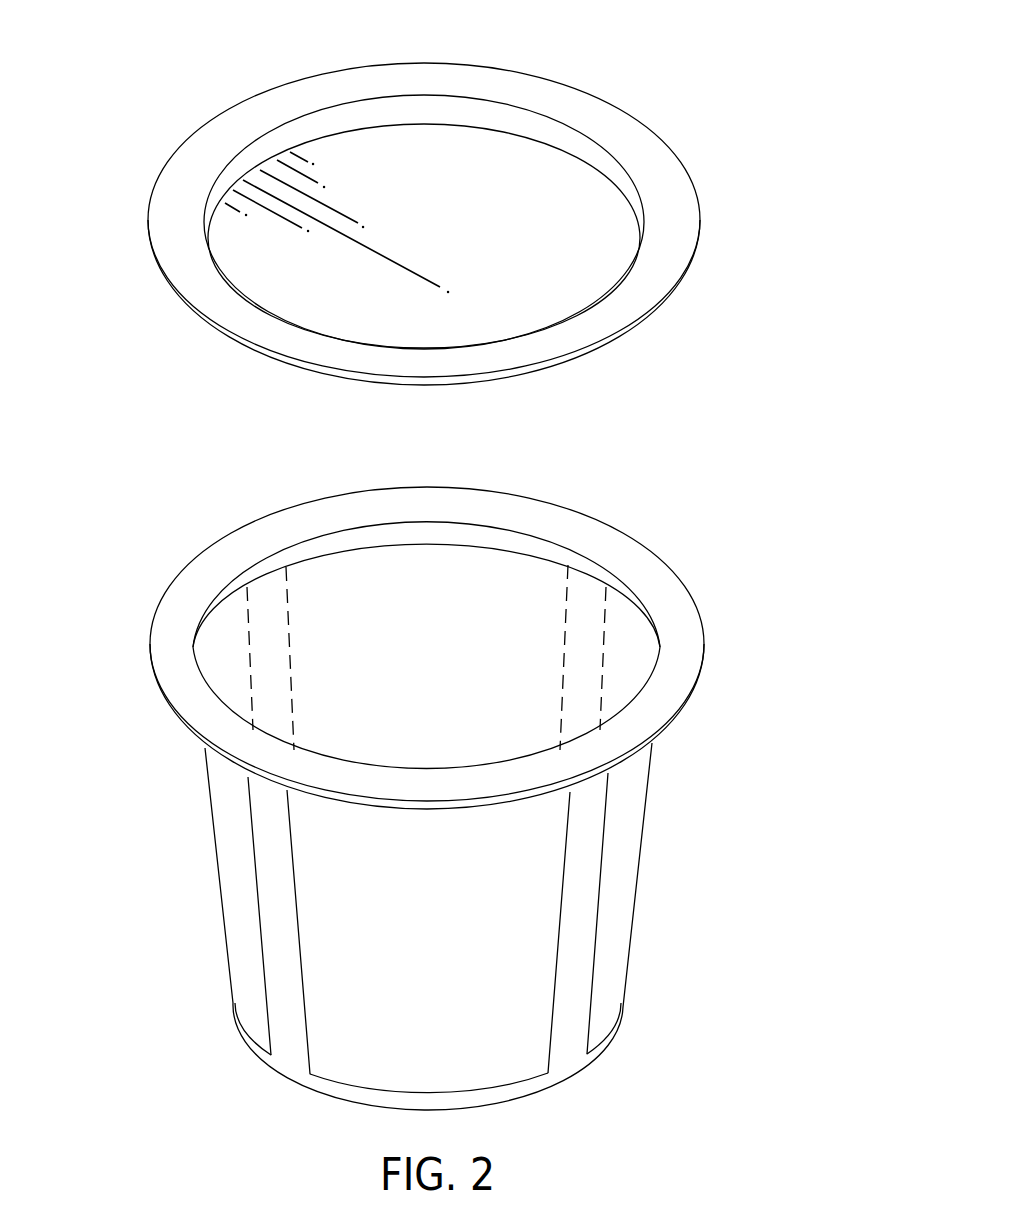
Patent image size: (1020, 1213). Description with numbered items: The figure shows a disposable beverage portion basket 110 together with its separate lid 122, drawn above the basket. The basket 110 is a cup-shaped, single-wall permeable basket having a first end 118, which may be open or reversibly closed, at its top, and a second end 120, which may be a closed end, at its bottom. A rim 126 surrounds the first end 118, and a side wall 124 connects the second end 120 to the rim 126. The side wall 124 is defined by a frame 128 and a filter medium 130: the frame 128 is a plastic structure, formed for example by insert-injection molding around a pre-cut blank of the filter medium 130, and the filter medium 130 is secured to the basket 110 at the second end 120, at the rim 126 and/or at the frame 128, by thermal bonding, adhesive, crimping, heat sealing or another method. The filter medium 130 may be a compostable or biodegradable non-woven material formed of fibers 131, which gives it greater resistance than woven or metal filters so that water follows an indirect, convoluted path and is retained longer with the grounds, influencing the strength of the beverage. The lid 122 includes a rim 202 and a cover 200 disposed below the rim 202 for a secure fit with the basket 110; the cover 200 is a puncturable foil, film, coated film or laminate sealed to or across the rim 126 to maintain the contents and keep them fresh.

The basket 110 is at (164, 527).
The first end 118 is at (368, 598).
The second end 120 is at (577, 1073).
The lid 122 is at (166, 106).
The side wall 124 is at (635, 900).
The rim 126 is at (632, 560).
The frame 128 is at (427, 1103).
The filter medium 130 is at (240, 846).
The fibers 131 is at (502, 603).
The cover 200 is at (392, 157).
The rim 202 is at (629, 145).